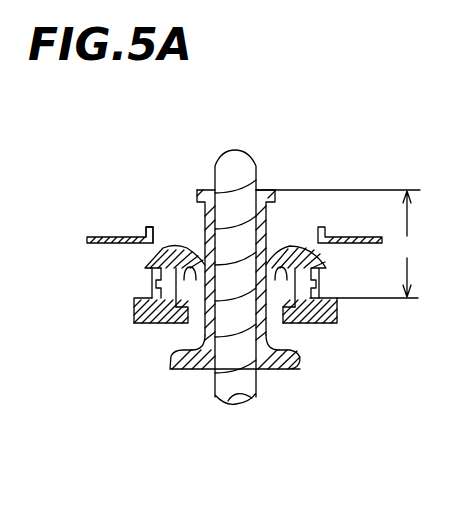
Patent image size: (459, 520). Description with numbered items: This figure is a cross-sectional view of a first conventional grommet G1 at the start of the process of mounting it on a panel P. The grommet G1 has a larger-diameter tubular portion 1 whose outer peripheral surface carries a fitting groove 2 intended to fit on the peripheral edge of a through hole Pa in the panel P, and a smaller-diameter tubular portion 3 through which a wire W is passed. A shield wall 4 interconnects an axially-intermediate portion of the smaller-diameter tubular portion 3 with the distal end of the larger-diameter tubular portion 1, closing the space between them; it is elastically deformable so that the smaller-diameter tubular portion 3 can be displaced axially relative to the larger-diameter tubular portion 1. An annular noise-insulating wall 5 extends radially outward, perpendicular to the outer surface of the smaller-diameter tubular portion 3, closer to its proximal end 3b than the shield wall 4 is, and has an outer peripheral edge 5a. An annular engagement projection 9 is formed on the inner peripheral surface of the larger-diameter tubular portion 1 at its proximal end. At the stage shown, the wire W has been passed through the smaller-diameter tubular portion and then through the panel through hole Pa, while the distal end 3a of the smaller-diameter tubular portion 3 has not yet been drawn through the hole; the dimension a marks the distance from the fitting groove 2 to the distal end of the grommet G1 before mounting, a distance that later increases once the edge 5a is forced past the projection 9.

The panel P is at (115, 236).
The through hole Pa is at (155, 232).
The shield wall 4 is at (190, 247).
The distal end of the smaller-diameter tubular portion 3a is at (258, 186).
The grommet G1 is at (282, 226).
The dimension a is at (405, 244).
The fitting groove 2 is at (132, 296).
The larger-diameter tubular portion 1 is at (148, 325).
The smaller-diameter tubular portion 3 is at (202, 326).
The annular engagement projection 9 is at (173, 292).
The noise-insulating wall 5 is at (187, 372).
The outer peripheral edge of the noise-insulating wall 5a is at (183, 348).
The wire W is at (234, 388).
The proximal end of the smaller-diameter tubular portion 3b is at (263, 370).